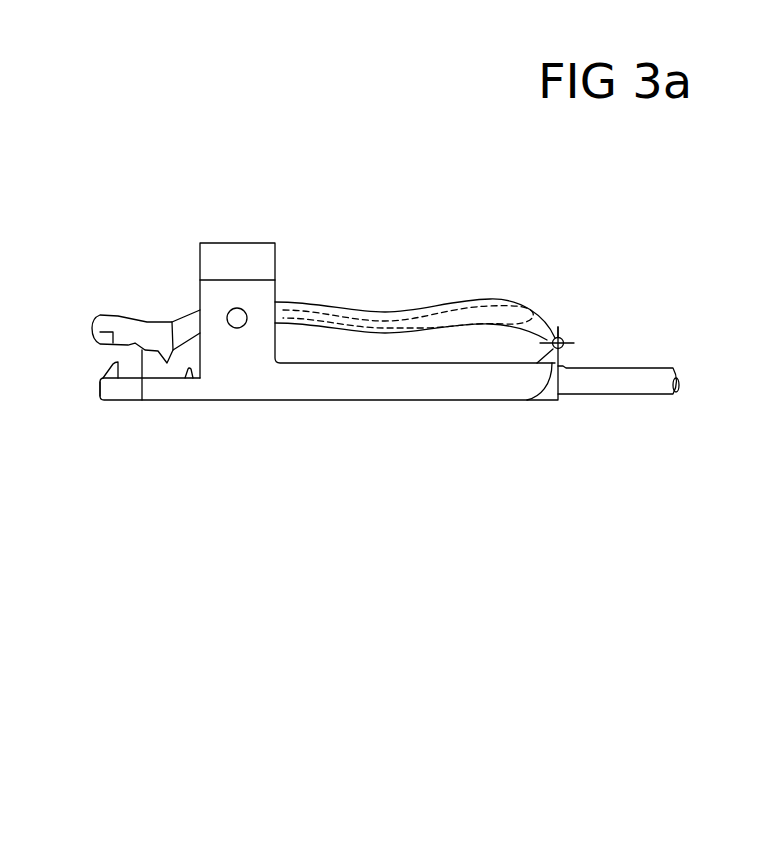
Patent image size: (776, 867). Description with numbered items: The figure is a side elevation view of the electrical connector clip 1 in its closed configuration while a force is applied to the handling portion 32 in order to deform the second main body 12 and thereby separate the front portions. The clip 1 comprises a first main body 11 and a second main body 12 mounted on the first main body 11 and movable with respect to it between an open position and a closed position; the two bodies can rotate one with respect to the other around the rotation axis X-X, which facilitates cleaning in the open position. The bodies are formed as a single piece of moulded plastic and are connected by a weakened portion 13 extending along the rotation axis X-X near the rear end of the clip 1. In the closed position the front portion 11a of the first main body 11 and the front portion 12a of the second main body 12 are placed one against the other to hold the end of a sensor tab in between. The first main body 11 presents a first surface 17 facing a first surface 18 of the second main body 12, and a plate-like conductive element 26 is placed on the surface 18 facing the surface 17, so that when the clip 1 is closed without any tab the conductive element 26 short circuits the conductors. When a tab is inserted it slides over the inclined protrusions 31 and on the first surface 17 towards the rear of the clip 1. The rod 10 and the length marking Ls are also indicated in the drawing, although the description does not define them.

The electrical connector clip 1 is at (384, 283).
The rod 10 is at (598, 397).
The first main body 11 is at (453, 403).
The front portion of the first main body 11a is at (120, 402).
The second main body 12 is at (466, 292).
The front portion of the second main body 12a is at (118, 325).
The weakened portion 13 is at (562, 344).
The first surface 17 is at (193, 375).
The first surface of the second main body 18 is at (173, 348).
The conductive element 26 is at (142, 400).
The inclined protrusions 31 is at (98, 378).
The handling portion 32 is at (404, 298).
The length Ls is at (337, 303).
The rotation axis X-X is at (560, 328).